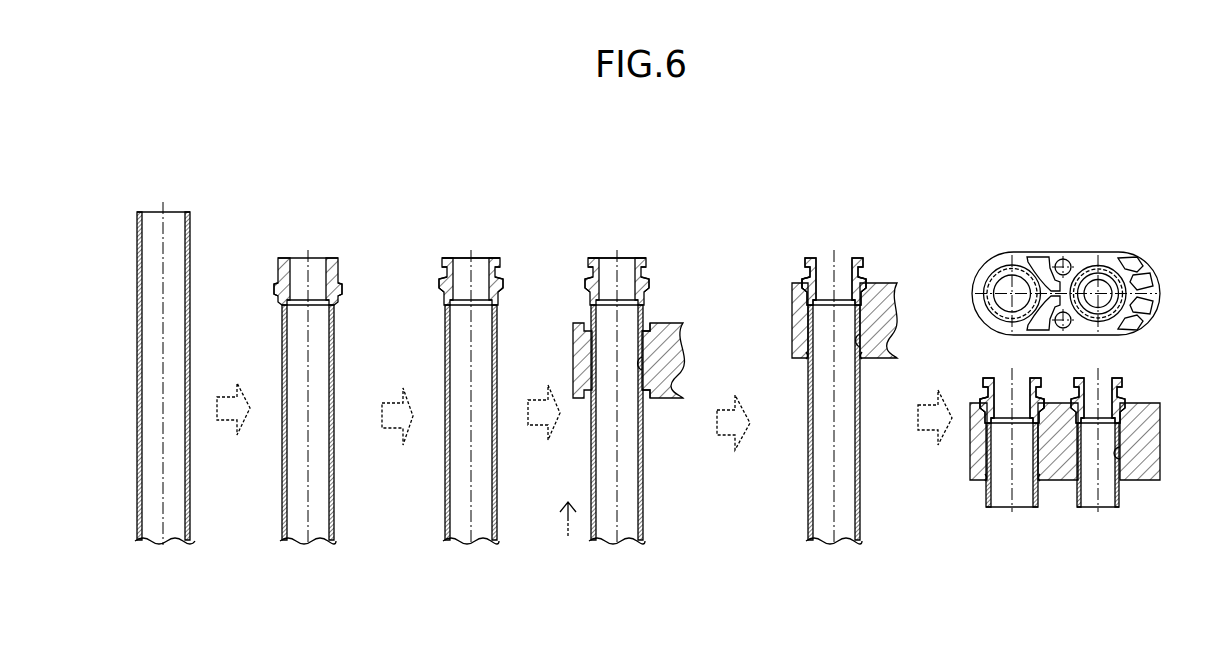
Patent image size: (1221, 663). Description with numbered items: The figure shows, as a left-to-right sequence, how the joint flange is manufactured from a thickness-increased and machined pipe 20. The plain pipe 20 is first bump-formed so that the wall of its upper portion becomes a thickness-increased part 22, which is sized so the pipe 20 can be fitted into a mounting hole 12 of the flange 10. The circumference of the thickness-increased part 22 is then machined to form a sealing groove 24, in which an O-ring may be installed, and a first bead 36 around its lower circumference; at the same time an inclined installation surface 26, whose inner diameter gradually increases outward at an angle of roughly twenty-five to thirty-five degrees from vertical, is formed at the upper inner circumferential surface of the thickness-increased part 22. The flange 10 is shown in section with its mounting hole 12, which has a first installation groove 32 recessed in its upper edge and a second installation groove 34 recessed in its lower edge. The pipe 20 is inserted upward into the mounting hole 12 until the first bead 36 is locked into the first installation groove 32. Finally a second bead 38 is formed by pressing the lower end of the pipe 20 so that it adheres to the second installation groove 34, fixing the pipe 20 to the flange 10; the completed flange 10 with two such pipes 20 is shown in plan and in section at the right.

The flange 10 is at (672, 361).
The mounting hole 12 is at (662, 372).
The pipe 20 is at (190, 222).
The thickness-increased part 22 is at (340, 263).
The sealing groove 24 is at (496, 265).
The inclined installation surface 26 is at (328, 259).
The first installation groove 32 is at (650, 324).
The second installation groove 34 is at (646, 398).
The first bead 36 is at (343, 289).
The second bead 38 is at (806, 358).